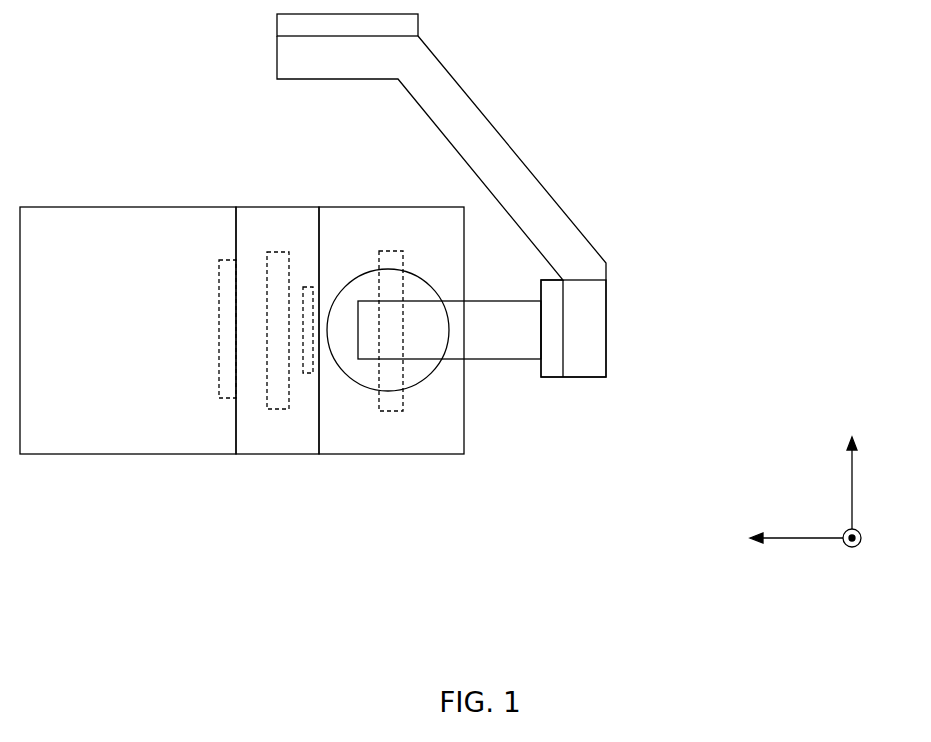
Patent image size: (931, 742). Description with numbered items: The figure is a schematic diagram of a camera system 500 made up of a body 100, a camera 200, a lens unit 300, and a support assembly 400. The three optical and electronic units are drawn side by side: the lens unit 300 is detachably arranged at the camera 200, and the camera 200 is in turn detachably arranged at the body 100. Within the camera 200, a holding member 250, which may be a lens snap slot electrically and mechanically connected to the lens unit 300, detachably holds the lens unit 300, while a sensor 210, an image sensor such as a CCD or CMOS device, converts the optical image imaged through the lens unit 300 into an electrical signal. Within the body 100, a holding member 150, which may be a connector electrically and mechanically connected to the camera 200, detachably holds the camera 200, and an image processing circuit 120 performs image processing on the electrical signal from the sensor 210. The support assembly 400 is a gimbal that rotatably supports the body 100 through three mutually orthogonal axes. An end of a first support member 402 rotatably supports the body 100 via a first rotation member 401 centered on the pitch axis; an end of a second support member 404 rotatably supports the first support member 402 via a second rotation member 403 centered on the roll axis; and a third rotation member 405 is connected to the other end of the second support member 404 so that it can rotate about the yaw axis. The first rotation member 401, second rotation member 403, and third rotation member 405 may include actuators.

The body 100 is at (390, 206).
The image processing circuit 120 is at (390, 413).
The holding member 150 is at (310, 375).
The camera 200 is at (275, 206).
The sensor 210 is at (275, 410).
The holding member 250 is at (227, 398).
The lens unit 300 is at (128, 206).
The support assembly 400 is at (520, 220).
The first rotation member 401 is at (563, 293).
The first support member 402 is at (500, 362).
The second rotation member 403 is at (553, 380).
The second support member 404 is at (510, 147).
The third rotation member 405 is at (418, 24).
The camera system 500 is at (430, 662).